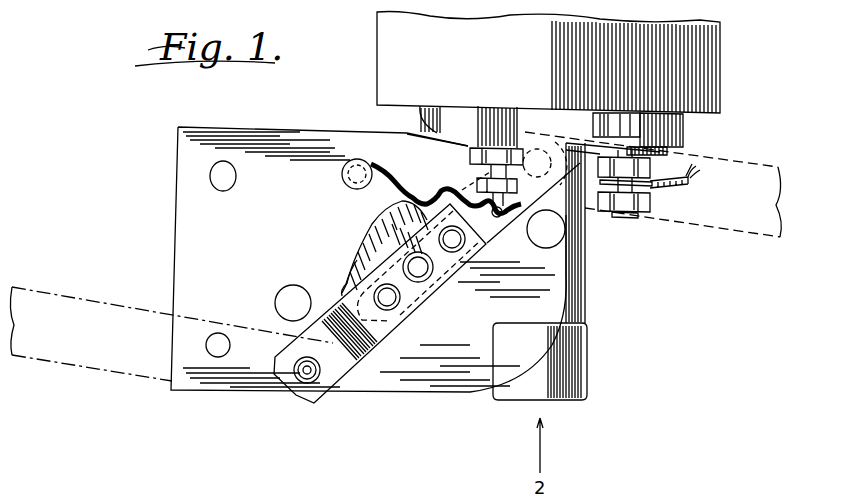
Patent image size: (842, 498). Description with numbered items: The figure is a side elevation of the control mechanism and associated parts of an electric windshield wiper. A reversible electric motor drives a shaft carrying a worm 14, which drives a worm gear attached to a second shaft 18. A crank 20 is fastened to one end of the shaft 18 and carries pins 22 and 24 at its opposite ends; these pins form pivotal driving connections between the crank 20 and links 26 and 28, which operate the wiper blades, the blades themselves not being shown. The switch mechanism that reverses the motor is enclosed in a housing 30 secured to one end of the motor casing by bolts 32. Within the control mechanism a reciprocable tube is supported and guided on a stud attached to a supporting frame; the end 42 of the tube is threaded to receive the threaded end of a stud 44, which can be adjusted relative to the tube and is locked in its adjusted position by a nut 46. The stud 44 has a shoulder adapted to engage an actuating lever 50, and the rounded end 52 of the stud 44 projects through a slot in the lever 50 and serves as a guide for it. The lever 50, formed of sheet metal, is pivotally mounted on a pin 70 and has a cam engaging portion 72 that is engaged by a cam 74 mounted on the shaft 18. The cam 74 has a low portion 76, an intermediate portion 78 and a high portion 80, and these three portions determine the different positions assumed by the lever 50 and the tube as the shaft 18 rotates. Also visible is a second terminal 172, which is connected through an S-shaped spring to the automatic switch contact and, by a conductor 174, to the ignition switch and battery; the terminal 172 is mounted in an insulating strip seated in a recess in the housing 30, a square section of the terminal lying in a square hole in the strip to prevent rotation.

The worm 14 is at (562, 400).
The second shaft 18 is at (419, 282).
The crank 20 is at (393, 326).
The pin 22 is at (307, 370).
The pin 24 is at (537, 148).
The link 26 is at (100, 355).
The link 28 is at (700, 227).
The housing 30 is at (398, 65).
The bolts 32 is at (645, 128).
The end of the tube 42 is at (490, 122).
The stud 44 is at (490, 168).
The nut 46 is at (486, 147).
The actuating lever 50 is at (382, 168).
The rounded end of the stud 52 is at (497, 218).
The pin 70 is at (342, 177).
The cam engaging portion 72 is at (423, 202).
The cam 74 is at (383, 226).
The low portion 76 is at (446, 186).
The intermediate portion 78 is at (358, 240).
The high portion 80 is at (347, 282).
The second terminal 172 is at (648, 216).
The conductor 174 is at (700, 177).